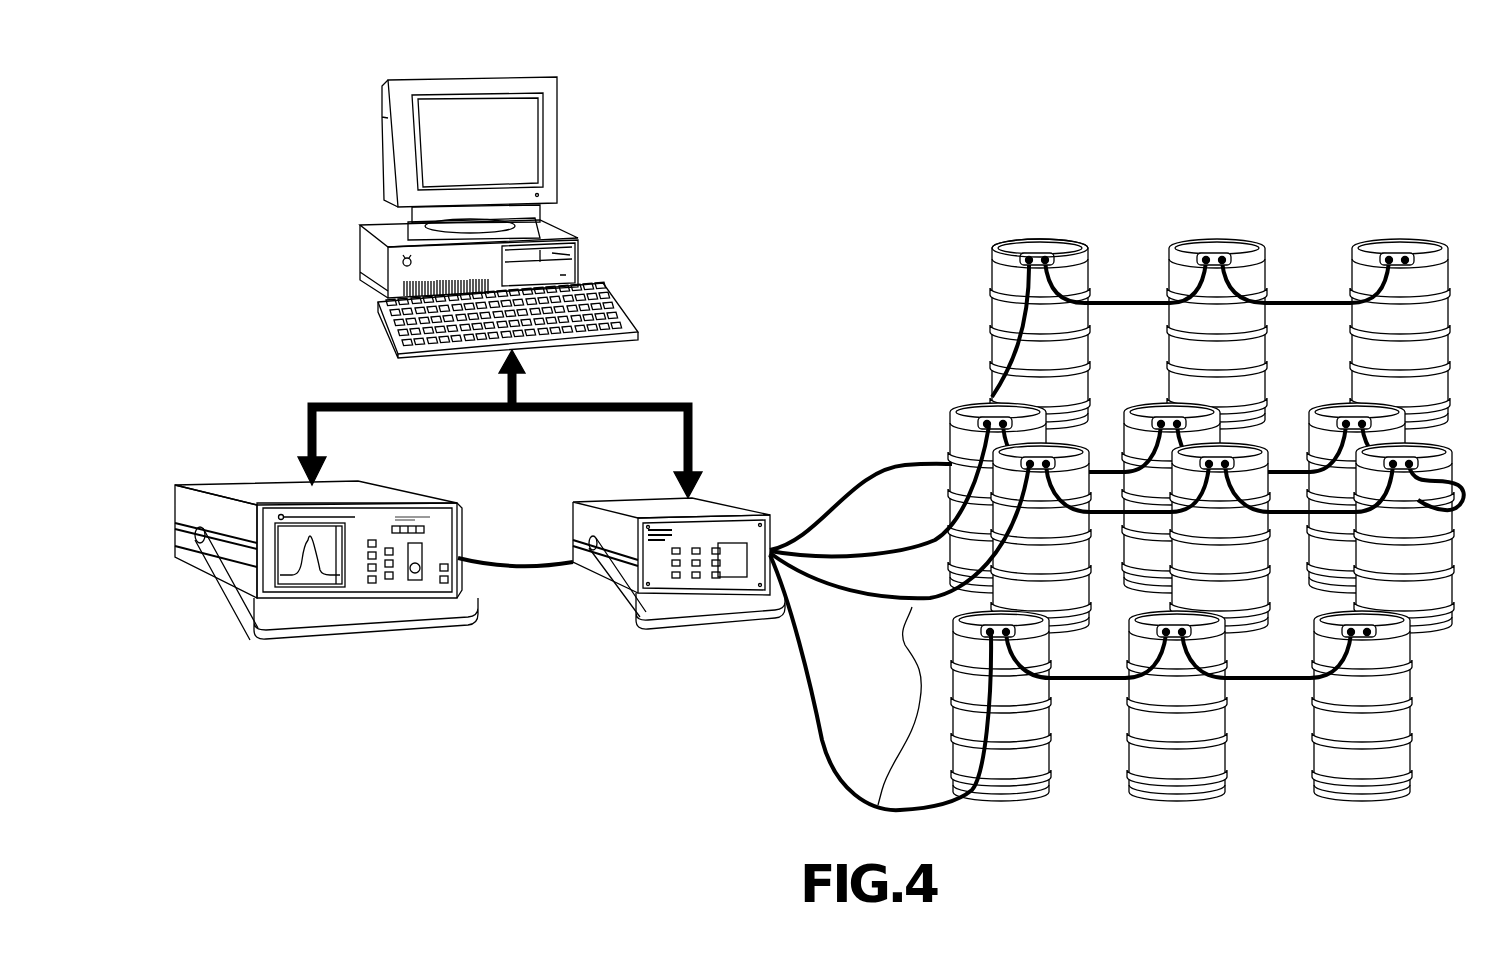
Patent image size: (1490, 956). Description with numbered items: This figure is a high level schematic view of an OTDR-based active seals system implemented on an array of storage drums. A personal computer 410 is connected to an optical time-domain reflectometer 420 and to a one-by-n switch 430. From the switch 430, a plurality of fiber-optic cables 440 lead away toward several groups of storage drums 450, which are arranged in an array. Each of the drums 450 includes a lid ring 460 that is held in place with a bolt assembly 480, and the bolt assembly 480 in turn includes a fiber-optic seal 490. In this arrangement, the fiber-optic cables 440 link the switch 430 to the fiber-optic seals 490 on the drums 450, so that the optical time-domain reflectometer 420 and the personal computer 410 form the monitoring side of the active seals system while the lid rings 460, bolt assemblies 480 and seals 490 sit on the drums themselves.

The personal computer 410 is at (533, 77).
The optical time-domain reflectometer 420 is at (215, 483).
The 1 by n switch 430 is at (612, 500).
The fiber-optic cables 440 is at (903, 475).
The storage drums 450 is at (1200, 242).
The lid ring 460 is at (993, 247).
The bolt assembly 480 is at (1028, 257).
The fiber-optic seal 490 is at (1035, 253).